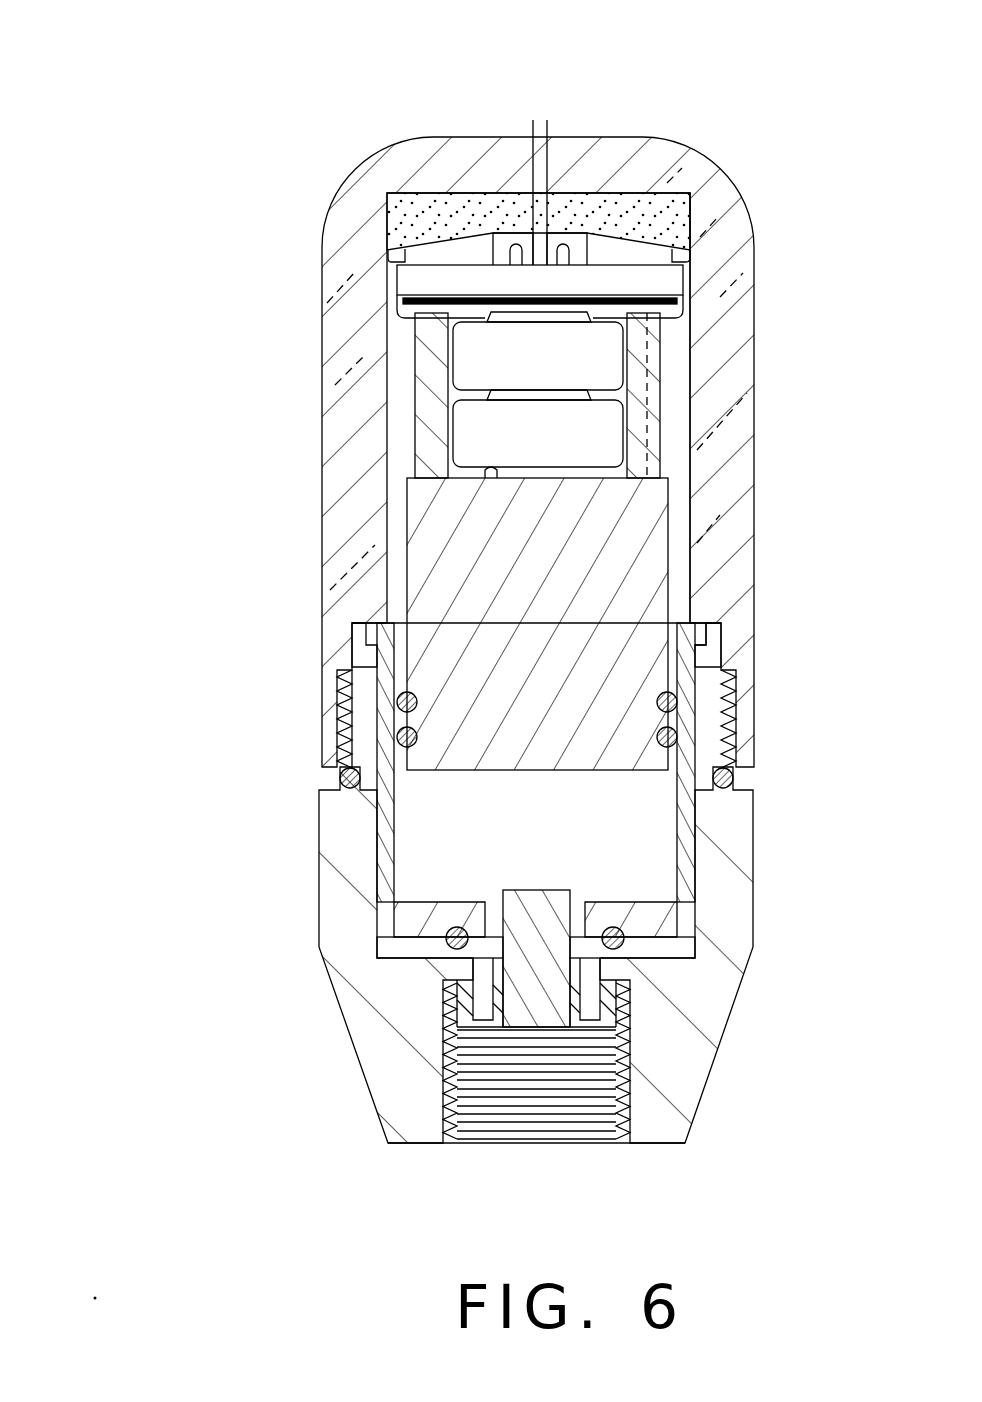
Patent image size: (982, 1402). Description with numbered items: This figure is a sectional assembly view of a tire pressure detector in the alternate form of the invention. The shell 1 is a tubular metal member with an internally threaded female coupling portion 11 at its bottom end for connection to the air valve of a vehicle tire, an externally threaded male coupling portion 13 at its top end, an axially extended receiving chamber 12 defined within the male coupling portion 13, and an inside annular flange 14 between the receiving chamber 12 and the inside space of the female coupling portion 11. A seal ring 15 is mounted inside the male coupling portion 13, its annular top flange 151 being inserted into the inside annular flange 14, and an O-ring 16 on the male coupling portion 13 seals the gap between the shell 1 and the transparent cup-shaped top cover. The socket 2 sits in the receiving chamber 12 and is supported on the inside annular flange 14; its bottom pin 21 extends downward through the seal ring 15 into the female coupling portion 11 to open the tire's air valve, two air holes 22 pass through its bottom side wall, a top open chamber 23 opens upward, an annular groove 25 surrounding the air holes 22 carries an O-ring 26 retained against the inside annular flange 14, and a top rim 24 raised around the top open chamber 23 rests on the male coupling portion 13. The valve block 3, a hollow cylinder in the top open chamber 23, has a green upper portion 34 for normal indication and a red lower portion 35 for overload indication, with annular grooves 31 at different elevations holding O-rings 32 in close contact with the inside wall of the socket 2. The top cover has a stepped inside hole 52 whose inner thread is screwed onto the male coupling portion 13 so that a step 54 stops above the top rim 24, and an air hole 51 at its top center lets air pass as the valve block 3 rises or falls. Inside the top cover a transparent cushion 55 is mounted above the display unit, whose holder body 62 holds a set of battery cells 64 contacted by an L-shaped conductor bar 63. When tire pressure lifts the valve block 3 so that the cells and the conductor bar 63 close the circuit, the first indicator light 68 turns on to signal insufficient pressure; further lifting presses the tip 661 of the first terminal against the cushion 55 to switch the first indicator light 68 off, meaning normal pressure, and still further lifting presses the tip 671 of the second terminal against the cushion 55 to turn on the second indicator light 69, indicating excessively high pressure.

The shell 1 is at (494, 985).
The socket 2 is at (489, 773).
The valve block 3 is at (437, 515).
The internally threaded female coupling portion 11 is at (613, 1085).
The axially extended receiving chamber 12 is at (373, 725).
The externally threaded male coupling portion 13 is at (343, 698).
The inside annular flange 14 is at (478, 968).
The annular top flange 151 is at (593, 992).
The seal ring 15 is at (443, 1067).
The O-ring 16 is at (340, 778).
The bottom pin 21 is at (537, 1017).
The air holes 22 is at (580, 910).
The top open chamber 23 is at (392, 618).
The top rim 24 is at (721, 634).
The annular groove 25 is at (450, 935).
The O-ring 26 is at (624, 942).
The annular grooves 31 is at (395, 682).
The O-rings 32 is at (680, 698).
The upper portion 34 is at (677, 540).
The lower portion 35 is at (697, 660).
The air hole 51 is at (542, 120).
The stepped inside hole 52 is at (342, 398).
The step 54 is at (366, 624).
The transparent cushion 55 is at (655, 193).
The holder body 62 is at (643, 357).
The conductor bar 63 is at (510, 470).
The battery cells 64 is at (600, 428).
The first indicator light 68 is at (577, 235).
The second indicator light 69 is at (498, 237).
The tip of the first terminal 661 is at (692, 255).
The tip of the second terminal 671 is at (388, 255).